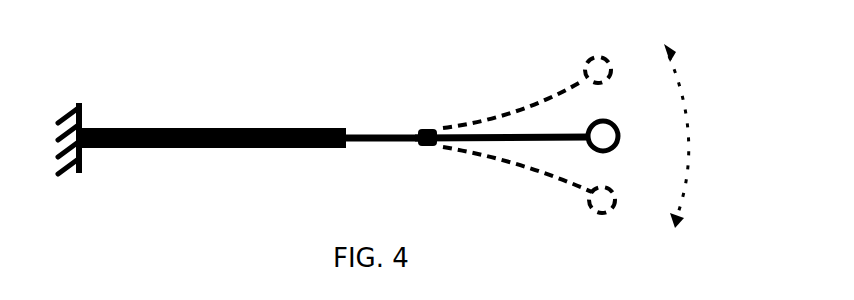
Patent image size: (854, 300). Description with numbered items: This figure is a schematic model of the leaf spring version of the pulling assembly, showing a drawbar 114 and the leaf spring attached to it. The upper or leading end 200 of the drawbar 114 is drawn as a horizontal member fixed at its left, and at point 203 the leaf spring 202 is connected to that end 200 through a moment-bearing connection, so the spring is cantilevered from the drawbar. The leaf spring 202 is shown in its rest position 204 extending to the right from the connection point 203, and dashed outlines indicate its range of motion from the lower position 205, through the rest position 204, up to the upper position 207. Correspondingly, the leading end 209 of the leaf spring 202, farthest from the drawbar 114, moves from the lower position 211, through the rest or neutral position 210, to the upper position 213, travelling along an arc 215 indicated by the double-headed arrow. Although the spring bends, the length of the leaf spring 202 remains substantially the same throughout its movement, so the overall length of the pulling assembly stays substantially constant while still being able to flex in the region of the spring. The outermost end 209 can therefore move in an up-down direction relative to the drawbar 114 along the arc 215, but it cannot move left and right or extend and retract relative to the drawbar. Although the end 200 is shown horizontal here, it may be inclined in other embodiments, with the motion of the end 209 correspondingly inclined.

The drawbar 114 is at (120, 148).
The upper or leading end of the drawbar 200 is at (193, 128).
The connection point 203 is at (352, 131).
The leaf spring 202 is at (543, 134).
The rest position of the leaf spring 204 is at (573, 146).
The lower position of the leaf spring 205 is at (553, 177).
The upper position of the leaf spring 207 is at (527, 106).
The leading end of the leaf spring 209 is at (608, 117).
The rest or neutral position of the leading end 210 is at (622, 133).
The lower position of the leading end 211 is at (608, 190).
The upper position of the leading end 213 is at (605, 53).
The arc 215 is at (687, 108).